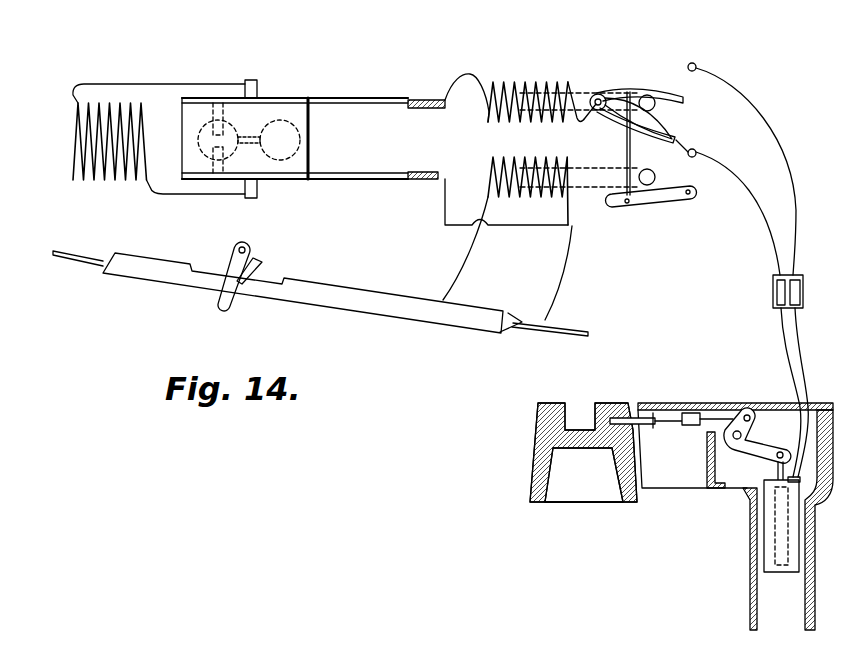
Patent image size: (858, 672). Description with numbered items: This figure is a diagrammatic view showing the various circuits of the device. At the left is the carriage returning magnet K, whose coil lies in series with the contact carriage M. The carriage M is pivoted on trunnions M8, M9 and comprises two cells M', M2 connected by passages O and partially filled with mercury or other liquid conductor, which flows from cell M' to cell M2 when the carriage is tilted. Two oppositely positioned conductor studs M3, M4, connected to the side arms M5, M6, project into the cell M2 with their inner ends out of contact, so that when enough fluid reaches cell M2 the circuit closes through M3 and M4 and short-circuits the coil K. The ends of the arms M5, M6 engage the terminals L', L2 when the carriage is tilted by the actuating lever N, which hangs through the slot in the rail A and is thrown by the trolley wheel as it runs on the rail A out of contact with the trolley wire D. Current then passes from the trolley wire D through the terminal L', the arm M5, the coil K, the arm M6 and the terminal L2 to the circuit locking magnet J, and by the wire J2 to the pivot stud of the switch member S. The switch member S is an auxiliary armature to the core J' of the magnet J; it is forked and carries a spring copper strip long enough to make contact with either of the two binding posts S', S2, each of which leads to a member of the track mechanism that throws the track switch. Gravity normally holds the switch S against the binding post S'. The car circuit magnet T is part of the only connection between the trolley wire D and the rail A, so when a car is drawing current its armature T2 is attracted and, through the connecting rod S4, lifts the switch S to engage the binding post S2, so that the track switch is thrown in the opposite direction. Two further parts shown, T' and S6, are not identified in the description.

The carriage returning magnet K is at (84, 160).
The contact carriage M is at (295, 150).
The cell M' is at (323, 138).
The cell M2 is at (203, 147).
The conductor stud M3 is at (231, 160).
The conductor stud M4 is at (231, 119).
The arm M5 is at (347, 183).
The arm M6 is at (378, 98).
The trunnion M8 is at (258, 198).
The trunnion M9 is at (258, 80).
The passages O is at (249, 132).
The terminal L2 is at (428, 109).
The terminal L' is at (423, 165).
The circuit locking magnet J is at (541, 89).
The wire J2 is at (583, 121).
The core J' is at (653, 109).
The car circuit magnet T is at (540, 238).
The roller T' is at (653, 174).
The armature T2 is at (643, 204).
The switch member S is at (636, 105).
The binding post S2 is at (691, 63).
The connecting rod S4 is at (631, 140).
The lever arm S6 is at (688, 103).
The binding post S' is at (728, 207).
The actuating lever N is at (230, 307).
The rail A is at (420, 319).
The trolley wire D is at (576, 328).